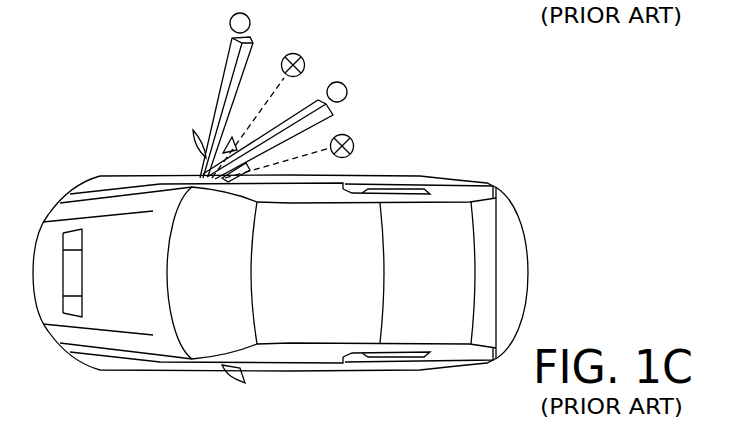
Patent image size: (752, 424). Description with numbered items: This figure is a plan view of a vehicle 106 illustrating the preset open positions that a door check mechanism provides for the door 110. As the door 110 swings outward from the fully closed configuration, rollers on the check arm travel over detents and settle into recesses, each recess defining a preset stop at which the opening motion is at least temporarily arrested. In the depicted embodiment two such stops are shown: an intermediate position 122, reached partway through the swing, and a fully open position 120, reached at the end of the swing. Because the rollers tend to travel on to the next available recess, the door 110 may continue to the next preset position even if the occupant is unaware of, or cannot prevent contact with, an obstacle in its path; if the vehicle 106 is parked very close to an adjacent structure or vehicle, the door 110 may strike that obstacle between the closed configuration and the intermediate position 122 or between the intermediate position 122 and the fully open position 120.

The vehicle 106 is at (124, 178).
The door 110 is at (230, 72).
The fully open position 120 is at (251, 22).
The intermediate position 122 is at (347, 88).